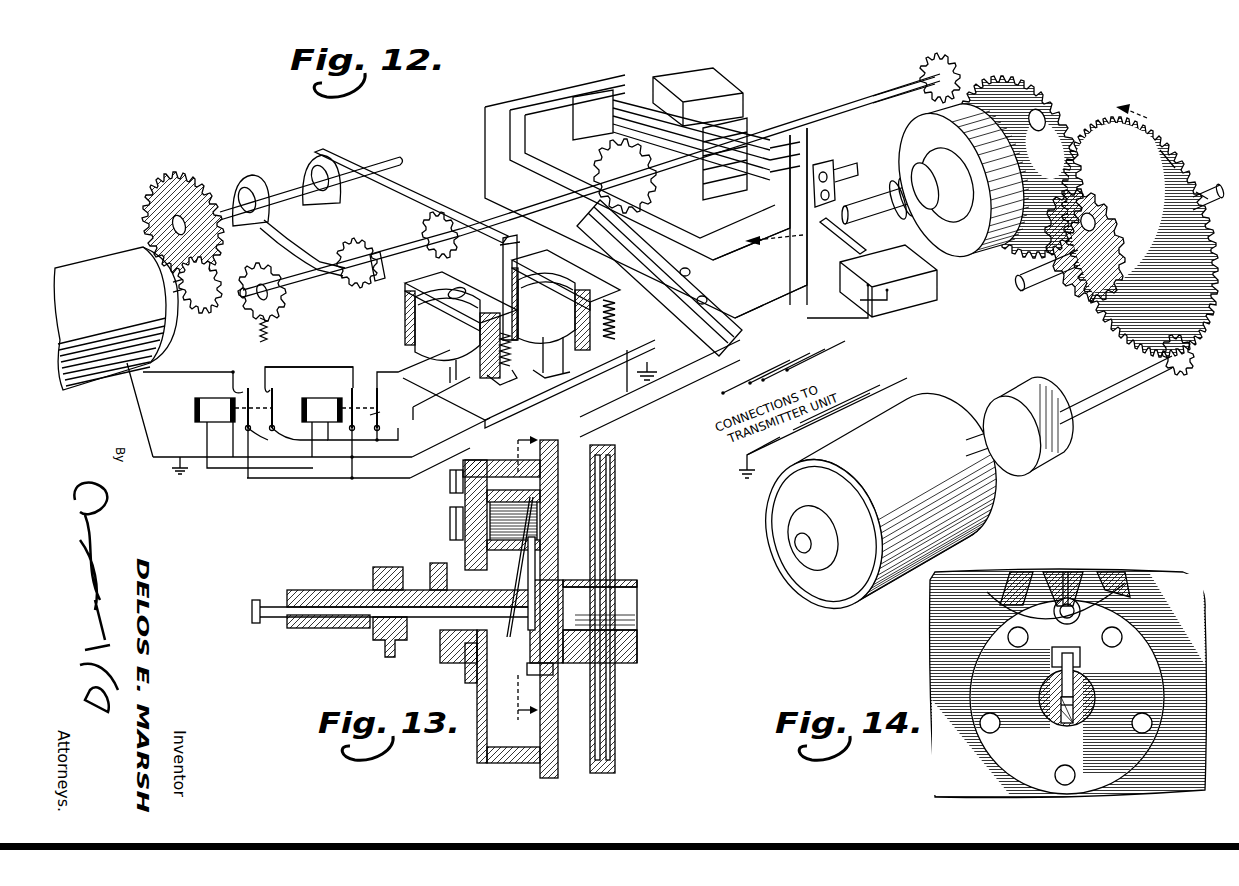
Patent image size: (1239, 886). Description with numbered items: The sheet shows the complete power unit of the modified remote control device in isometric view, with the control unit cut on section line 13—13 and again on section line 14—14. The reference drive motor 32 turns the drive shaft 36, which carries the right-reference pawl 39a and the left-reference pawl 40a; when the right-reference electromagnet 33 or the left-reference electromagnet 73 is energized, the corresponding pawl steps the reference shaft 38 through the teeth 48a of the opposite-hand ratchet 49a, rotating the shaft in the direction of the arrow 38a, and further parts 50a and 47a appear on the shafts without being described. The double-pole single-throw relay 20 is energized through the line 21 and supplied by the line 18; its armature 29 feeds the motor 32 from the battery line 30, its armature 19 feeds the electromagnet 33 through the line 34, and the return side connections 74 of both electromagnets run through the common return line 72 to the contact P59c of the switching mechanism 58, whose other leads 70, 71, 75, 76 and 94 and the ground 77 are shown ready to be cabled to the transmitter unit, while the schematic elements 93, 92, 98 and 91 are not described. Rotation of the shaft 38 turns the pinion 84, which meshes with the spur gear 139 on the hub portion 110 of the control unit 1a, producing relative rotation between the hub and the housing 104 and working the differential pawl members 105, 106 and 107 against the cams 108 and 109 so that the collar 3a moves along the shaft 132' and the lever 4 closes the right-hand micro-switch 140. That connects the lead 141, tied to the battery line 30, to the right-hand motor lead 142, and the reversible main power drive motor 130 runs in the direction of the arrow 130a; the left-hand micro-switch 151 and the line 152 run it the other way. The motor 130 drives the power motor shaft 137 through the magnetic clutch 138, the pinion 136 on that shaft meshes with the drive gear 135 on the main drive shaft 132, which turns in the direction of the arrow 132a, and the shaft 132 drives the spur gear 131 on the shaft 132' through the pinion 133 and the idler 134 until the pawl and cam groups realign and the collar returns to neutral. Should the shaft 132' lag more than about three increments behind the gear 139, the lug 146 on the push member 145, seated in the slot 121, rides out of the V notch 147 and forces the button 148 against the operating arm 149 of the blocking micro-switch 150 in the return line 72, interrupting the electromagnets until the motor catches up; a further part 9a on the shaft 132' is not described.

In FIG. 12, the power unit drive motor 32 is at (102, 263).
In FIG. 12, the drive shaft 36 is at (277, 190).
In FIG. 12, the left-reference pawl 40a is at (287, 252).
In FIG. 12, the right-reference pawl 39a is at (417, 198).
In FIG. 12, the reference shaft 38 is at (492, 222).
In FIG. 12, the gear 50a is at (284, 303).
In FIG. 12, the ratchet teeth 48a is at (349, 247).
In FIG. 12, the opposite-hand ratchet 49a is at (378, 272).
In FIG. 12, the ratchet wheel 47a is at (450, 258).
In FIG. 12, the left-reference electromagnet 73 is at (405, 350).
In FIG. 12, the right-reference electromagnet 33 is at (585, 262).
In FIG. 12, the return side connections 74 is at (499, 377).
In FIG. 12, the battery lead 141 is at (485, 147).
In FIG. 12, the right-hand motor lead 142 is at (540, 170).
In FIG. 12, the motor line 152 is at (713, 225).
In FIG. 12, the switching mechanism 58 is at (596, 155).
In FIG. 12, the left-hand micro-switch 151 is at (588, 92).
In FIG. 12, the right-hand micro-switch 140 is at (715, 88).
In FIG. 12, the contact P59c is at (790, 156).
In FIG. 12, the switch arm 4 is at (836, 168).
In FIG. 12, the connecting line 71 is at (790, 206).
In FIG. 12, the common return line 72 is at (595, 397).
In FIG. 12, the connecting line 70 is at (840, 268).
In FIG. 12, the ground connection 77 is at (663, 372).
In FIG. 12, the section line 13 is at (961, 190).
In FIG. 12, the control unit shaft 132' is at (879, 187).
In FIG. 13, the control unit shaft 132' is at (490, 615).
In FIG. 14, the control unit shaft 132' is at (1093, 688).
In FIG. 12, the collar 9a is at (905, 218).
In FIG. 12, the operating arm 149 is at (858, 244).
In FIG. 12, the blocking micro-switch 150 is at (925, 278).
In FIG. 12, the spur gear 139 is at (980, 105).
In FIG. 13, the spur gear 139 is at (545, 488).
In FIG. 12, the control unit 1a is at (1005, 125).
In FIG. 13, the control unit 1a is at (443, 526).
In FIG. 12, the hub portion 110 is at (1042, 130).
In FIG. 13, the hub portion 110 is at (553, 668).
In FIG. 12, the spur gear 131 is at (1069, 118).
In FIG. 13, the spur gear 131 is at (610, 697).
In FIG. 12, the drive gear 135 is at (1167, 160).
In FIG. 12, the pinion 133 is at (1087, 285).
In FIG. 12, the main power delivery shaft 132 is at (1122, 252).
In FIG. 12, the direction arrow 132a is at (1210, 185).
In FIG. 12, the idler 134 is at (1097, 226).
In FIG. 12, the pinion 84 is at (948, 82).
In FIG. 12, the direction arrow 38a is at (880, 97).
In FIG. 12, the main power drive motor 130 is at (871, 509).
In FIG. 12, the direction arrow 130a is at (970, 437).
In FIG. 12, the magnetic clutch 138 is at (1050, 457).
In FIG. 12, the power motor shaft 137 is at (1090, 393).
In FIG. 12, the pinion 136 is at (1170, 373).
In FIG. 12, the battery line 30 is at (360, 478).
In FIG. 12, the connecting lead 94 is at (723, 393).
In FIG. 12, the battery line 18 is at (750, 383).
In FIG. 12, the connecting line 75 is at (763, 381).
In FIG. 12, the connecting line 76 is at (787, 371).
In FIG. 12, the relay L 93 is at (222, 398).
In FIG. 12, the double-pole single-throw relay 20 is at (322, 393).
In FIG. 12, the contacts 92 is at (275, 398).
In FIG. 12, the relay armature 29 is at (379, 398).
In FIG. 12, the relay armature 19 is at (380, 412).
In FIG. 12, the relay coil line 21 is at (303, 432).
In FIG. 12, the conductor 98 is at (268, 440).
In FIG. 12, the conductor 91 is at (355, 367).
In FIG. 12, the electromagnet supply line 34 is at (450, 400).
In FIG. 13, the housing 104 is at (480, 690).
In FIG. 13, the push member 145 is at (280, 617).
In FIG. 14, the push member 145 is at (1055, 715).
In FIG. 13, the button 148 is at (270, 600).
In FIG. 13, the slot 121 is at (330, 628).
In FIG. 14, the slot 121 is at (1066, 725).
In FIG. 13, the collar 3a is at (400, 553).
In FIG. 13, the differential pawl member 105 is at (522, 553).
In FIG. 14, the differential pawl member 105 is at (1013, 575).
In FIG. 13, the lug 146 is at (528, 583).
In FIG. 14, the lug 146 is at (1060, 665).
In FIG. 13, the differential pawl 106 is at (543, 512).
In FIG. 14, the differential pawl 106 is at (1058, 572).
In FIG. 13, the differential cam 108 is at (540, 530).
In FIG. 14, the differential cam 108 is at (1125, 587).
In FIG. 13, the differential cam 109 is at (538, 547).
In FIG. 14, the differential cam 109 is at (1037, 620).
In FIG. 13, the V notch 147 is at (540, 557).
In FIG. 14, the V notch 147 is at (1075, 650).
In FIG. 13, the section line 14 is at (513, 585).
In FIG. 14, the differential pawl 107 is at (1070, 585).